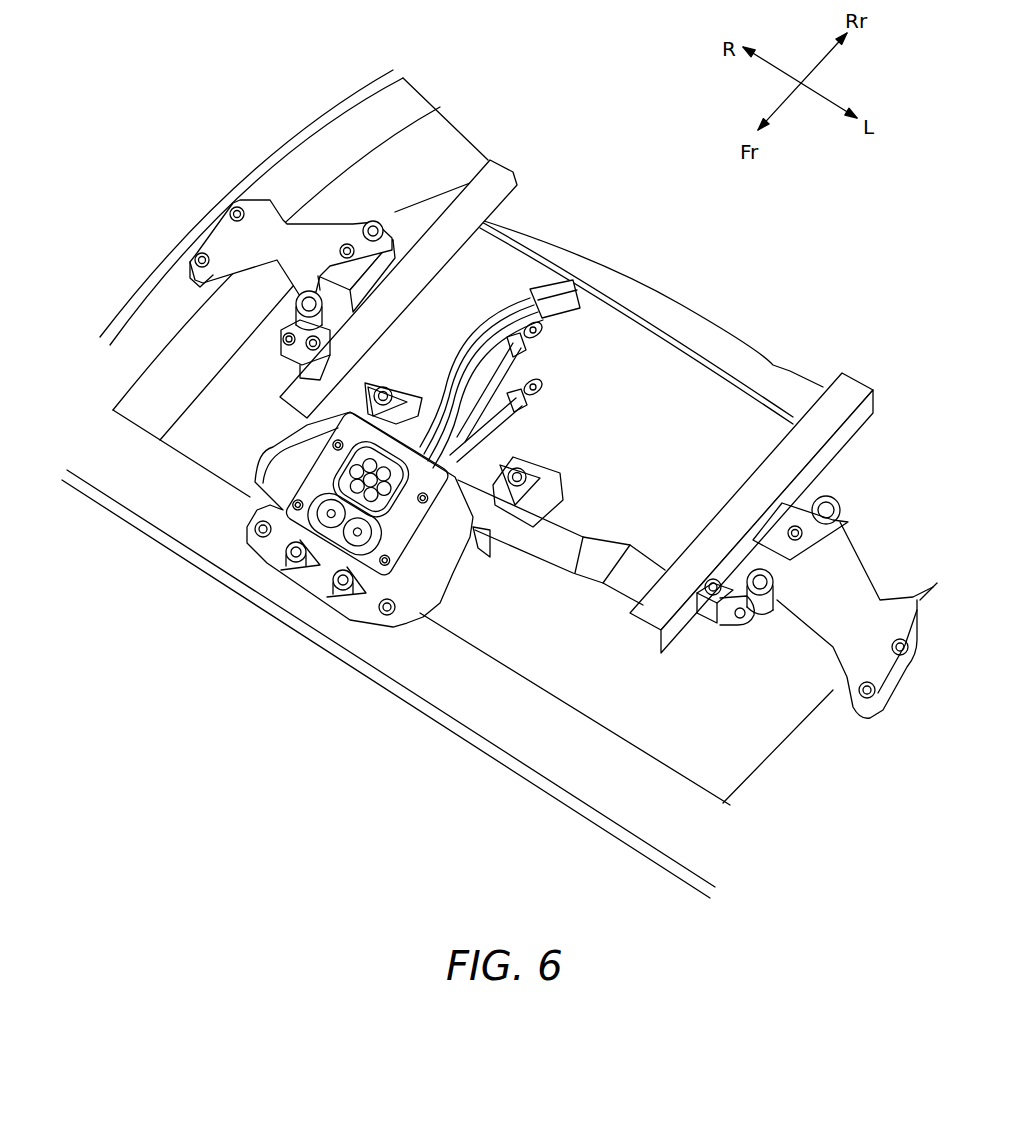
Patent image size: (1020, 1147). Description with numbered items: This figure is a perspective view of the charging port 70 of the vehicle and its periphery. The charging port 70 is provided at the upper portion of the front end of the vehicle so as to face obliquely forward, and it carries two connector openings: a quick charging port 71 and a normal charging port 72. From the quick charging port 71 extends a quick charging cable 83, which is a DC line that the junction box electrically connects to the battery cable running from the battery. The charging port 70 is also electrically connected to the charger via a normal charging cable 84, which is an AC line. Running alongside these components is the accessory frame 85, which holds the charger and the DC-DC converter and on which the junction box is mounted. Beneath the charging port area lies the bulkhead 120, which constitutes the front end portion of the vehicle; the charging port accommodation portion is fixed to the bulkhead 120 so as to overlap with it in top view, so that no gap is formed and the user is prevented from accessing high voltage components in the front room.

The charging port 70 is at (283, 500).
The quick charging port 71 is at (400, 510).
The normal charging port 72 is at (345, 540).
The quick charging cable 83 is at (492, 367).
The normal charging cable 84 is at (510, 317).
The accessory frame 85 is at (680, 304).
The bulkhead 120 is at (473, 700).